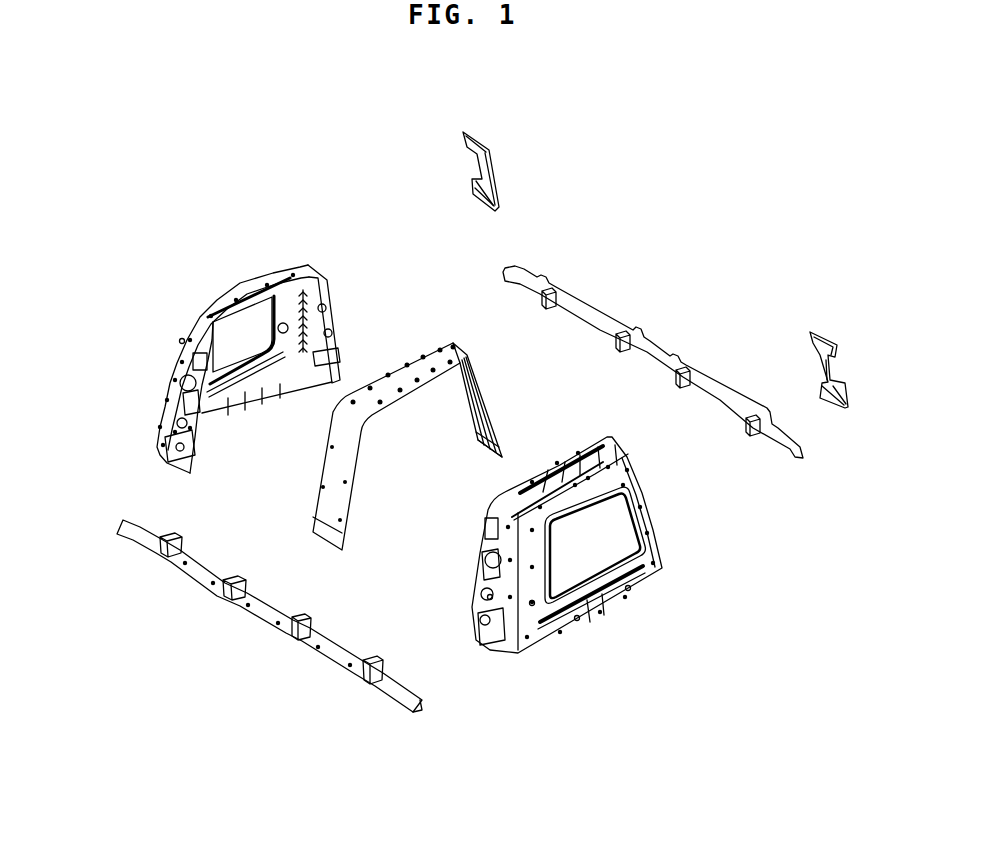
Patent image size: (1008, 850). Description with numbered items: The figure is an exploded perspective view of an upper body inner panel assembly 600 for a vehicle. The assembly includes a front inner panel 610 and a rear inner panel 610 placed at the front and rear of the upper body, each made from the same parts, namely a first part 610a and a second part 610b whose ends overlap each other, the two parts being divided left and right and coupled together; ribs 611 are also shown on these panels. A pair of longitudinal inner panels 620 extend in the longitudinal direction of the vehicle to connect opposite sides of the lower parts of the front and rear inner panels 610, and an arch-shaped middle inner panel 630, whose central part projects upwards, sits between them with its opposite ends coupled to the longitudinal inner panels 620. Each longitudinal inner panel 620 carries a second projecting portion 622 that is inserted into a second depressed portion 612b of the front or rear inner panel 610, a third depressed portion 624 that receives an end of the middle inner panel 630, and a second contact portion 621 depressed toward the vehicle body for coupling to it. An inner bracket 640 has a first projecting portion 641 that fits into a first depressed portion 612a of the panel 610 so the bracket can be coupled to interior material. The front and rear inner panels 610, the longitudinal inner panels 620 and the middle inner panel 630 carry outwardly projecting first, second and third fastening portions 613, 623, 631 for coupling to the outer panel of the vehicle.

The upper body inner panel assembly 600 is at (300, 121).
The front inner panel / rear inner panel 610 is at (226, 290).
The first part 610a is at (203, 313).
The second part 610b is at (290, 287).
The ribs 611 is at (328, 330).
The first depressed portion 612a is at (190, 400).
The second depressed portion 612b is at (172, 440).
The first fastening portion 613 is at (182, 341).
The longitudinal inner panel 620 is at (452, 481).
The second contact portion 621 is at (682, 367).
The second projecting portion 622 is at (520, 268).
The second fastening portion 623 is at (212, 582).
The third depressed portion 624 is at (253, 617).
The middle inner panel 630 is at (350, 417).
The third fastening portion 631 is at (421, 353).
The inner bracket 640 is at (618, 289).
The first projecting portion 641 is at (472, 187).